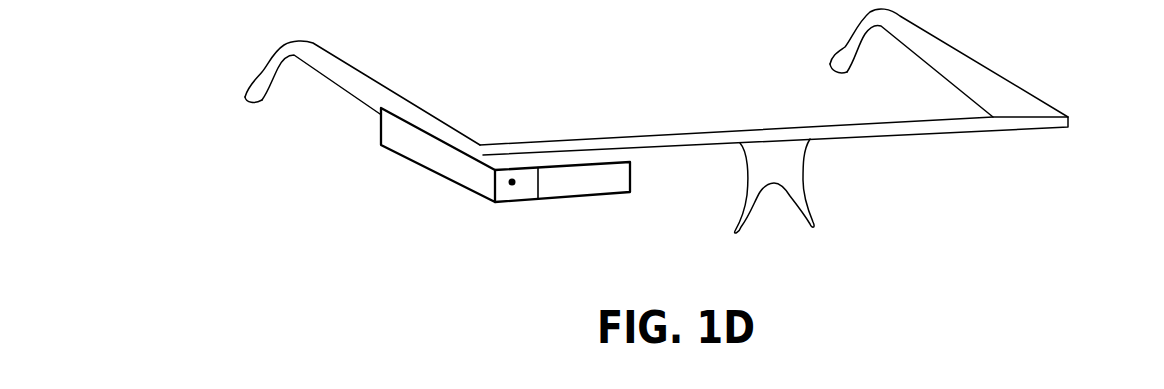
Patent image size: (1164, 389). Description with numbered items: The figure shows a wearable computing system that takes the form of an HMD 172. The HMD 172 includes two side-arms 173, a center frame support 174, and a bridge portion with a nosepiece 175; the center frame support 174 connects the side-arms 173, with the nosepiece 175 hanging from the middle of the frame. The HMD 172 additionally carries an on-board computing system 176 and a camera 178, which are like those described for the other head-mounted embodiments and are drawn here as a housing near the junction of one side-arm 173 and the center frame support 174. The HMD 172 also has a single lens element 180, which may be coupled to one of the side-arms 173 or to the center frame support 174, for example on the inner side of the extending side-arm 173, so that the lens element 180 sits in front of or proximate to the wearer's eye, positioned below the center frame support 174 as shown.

The HMD 172 is at (689, 123).
The side-arms 173 is at (346, 81).
The center frame support 174 is at (670, 138).
The nosepiece 175 is at (797, 178).
The on-board computing system 176 is at (420, 163).
The camera 178 is at (512, 186).
The single lens element 180 is at (587, 197).